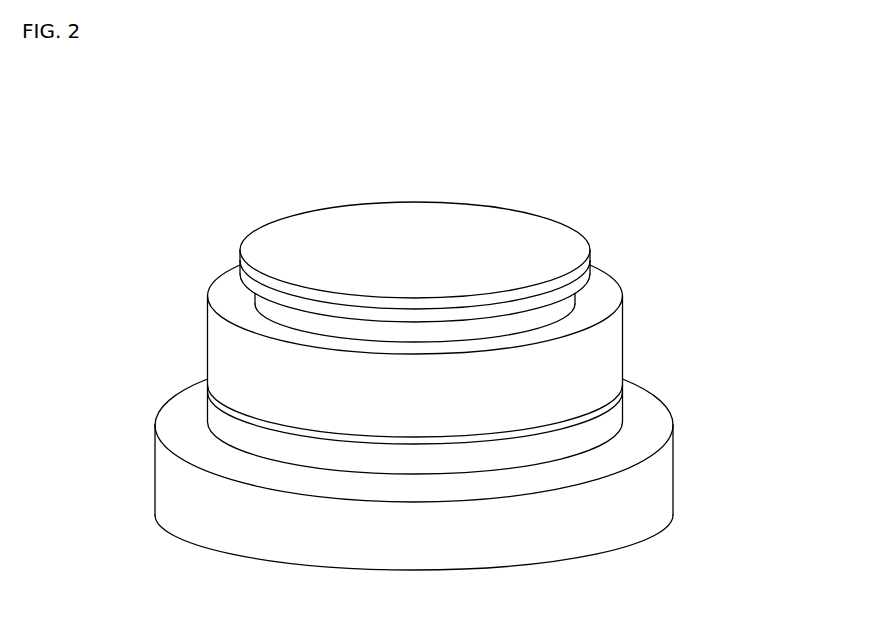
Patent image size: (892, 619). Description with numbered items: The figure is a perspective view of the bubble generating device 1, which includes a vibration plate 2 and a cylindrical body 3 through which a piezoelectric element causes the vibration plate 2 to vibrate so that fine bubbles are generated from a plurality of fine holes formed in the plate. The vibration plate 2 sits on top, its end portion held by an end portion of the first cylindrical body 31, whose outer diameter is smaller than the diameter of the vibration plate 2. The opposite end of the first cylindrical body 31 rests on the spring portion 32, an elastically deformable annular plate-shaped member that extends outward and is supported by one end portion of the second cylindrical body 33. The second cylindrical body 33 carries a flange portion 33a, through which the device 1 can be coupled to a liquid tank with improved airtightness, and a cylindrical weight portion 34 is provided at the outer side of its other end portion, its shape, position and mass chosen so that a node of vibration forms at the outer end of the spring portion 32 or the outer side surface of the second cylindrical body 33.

The bubble generating device 1 is at (574, 157).
The vibration plate 2 is at (488, 222).
The cylindrical body 3 is at (676, 236).
The first cylindrical body 31 is at (565, 307).
The spring portion 32 is at (610, 308).
The second cylindrical body 33 is at (625, 345).
The flange portion 33a is at (207, 392).
The weight portion 34 is at (676, 461).